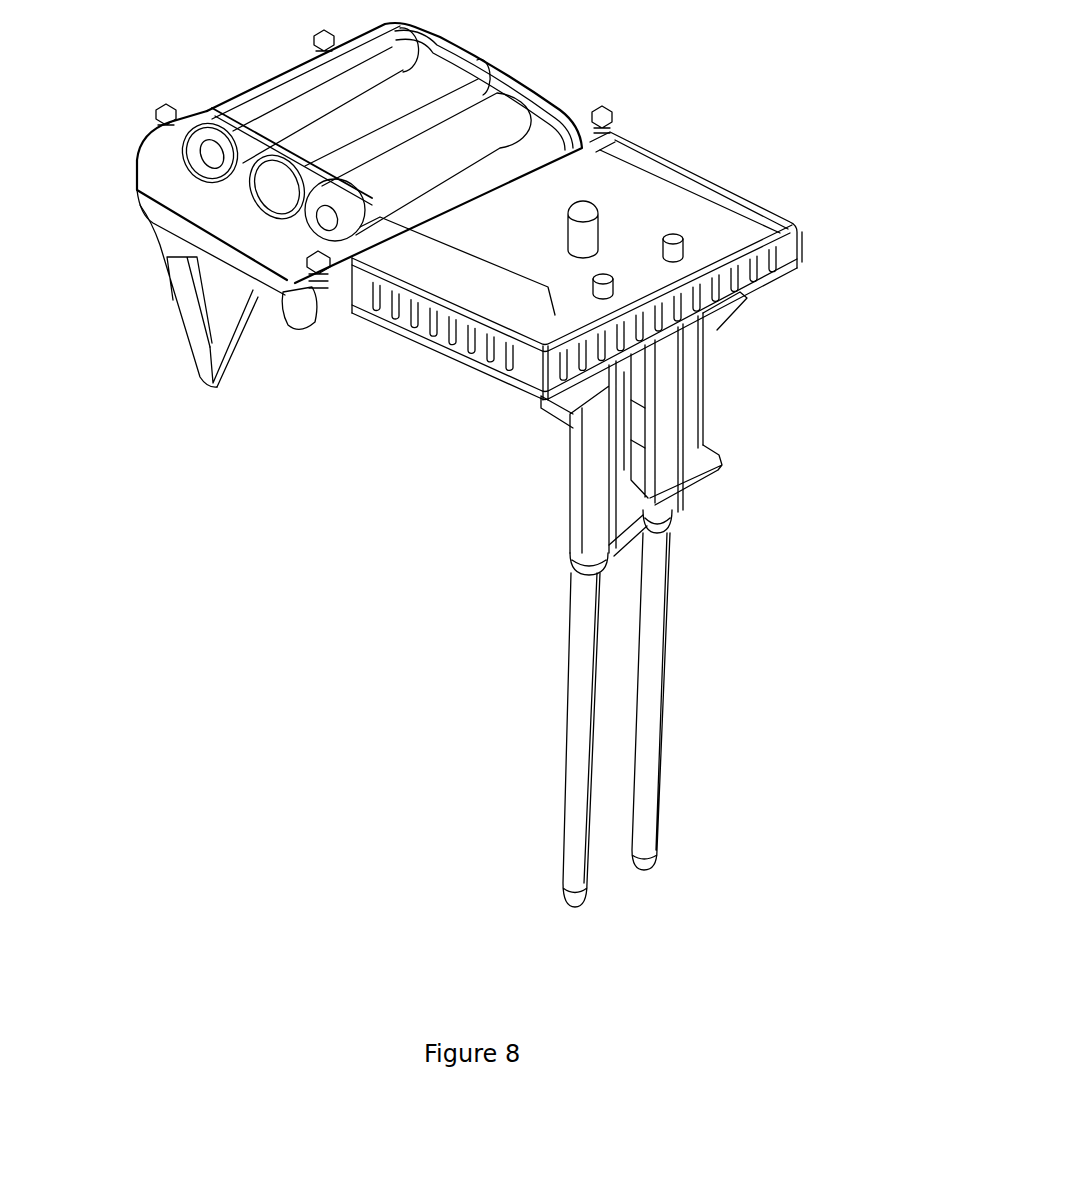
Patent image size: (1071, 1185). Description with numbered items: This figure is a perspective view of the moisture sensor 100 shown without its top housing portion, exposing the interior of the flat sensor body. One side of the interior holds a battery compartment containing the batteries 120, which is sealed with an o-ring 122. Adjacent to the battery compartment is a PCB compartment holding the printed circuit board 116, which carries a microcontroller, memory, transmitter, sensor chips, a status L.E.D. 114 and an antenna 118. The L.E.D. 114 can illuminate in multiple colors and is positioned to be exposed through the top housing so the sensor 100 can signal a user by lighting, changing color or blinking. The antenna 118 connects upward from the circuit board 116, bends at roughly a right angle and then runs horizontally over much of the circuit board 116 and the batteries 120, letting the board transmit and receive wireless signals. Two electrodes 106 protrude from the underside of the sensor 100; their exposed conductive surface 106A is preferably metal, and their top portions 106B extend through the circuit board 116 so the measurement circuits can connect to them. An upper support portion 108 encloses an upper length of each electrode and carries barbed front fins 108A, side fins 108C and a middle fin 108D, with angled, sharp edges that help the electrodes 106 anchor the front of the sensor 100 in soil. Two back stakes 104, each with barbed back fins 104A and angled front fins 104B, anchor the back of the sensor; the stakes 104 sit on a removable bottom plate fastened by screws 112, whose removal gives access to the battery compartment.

The moisture sensor 100 is at (275, 573).
The anchoring members or stakes 104 is at (197, 368).
The barbed back fins 104A is at (197, 306).
The angled front fins 104B is at (252, 320).
The electrodes 106 is at (566, 718).
The exposed surface of the electrodes 106A is at (678, 727).
The top portions of the electrodes 106B is at (700, 240).
The upper support portion 108 is at (718, 436).
The barbed front fins 108A is at (713, 482).
The side fins 108C is at (576, 410).
The middle fin 108D is at (660, 412).
The screws 112 is at (620, 125).
The status L.E.D. 114 is at (610, 215).
The printed circuit board 116 is at (412, 257).
The antenna 118 is at (522, 265).
The batteries 120 is at (300, 105).
The o-ring 122 is at (180, 160).